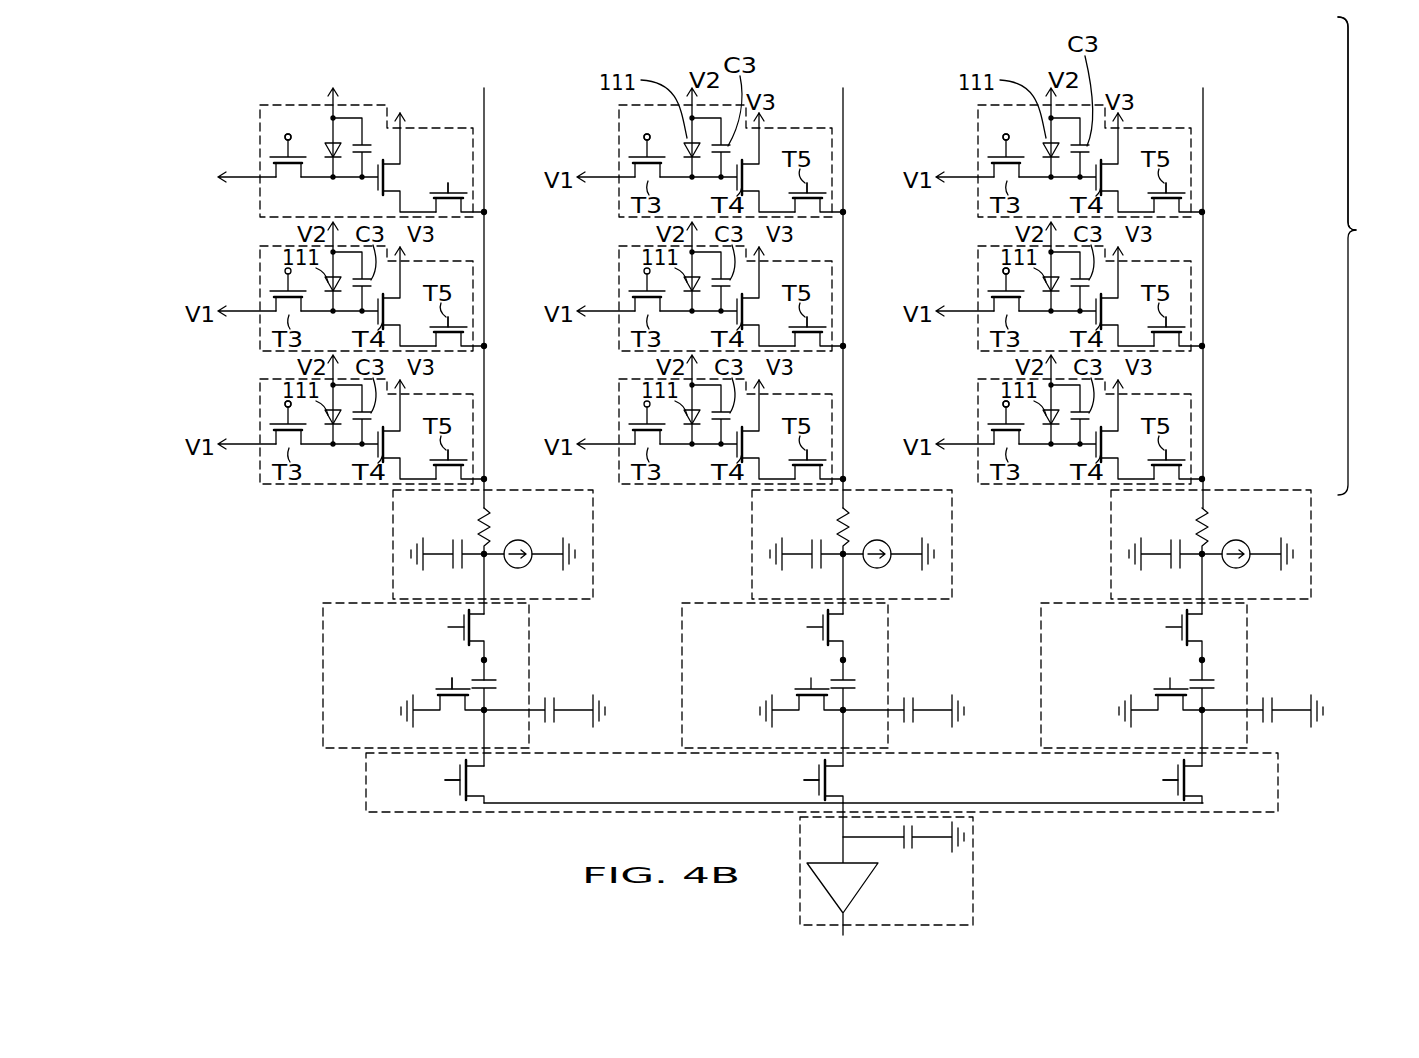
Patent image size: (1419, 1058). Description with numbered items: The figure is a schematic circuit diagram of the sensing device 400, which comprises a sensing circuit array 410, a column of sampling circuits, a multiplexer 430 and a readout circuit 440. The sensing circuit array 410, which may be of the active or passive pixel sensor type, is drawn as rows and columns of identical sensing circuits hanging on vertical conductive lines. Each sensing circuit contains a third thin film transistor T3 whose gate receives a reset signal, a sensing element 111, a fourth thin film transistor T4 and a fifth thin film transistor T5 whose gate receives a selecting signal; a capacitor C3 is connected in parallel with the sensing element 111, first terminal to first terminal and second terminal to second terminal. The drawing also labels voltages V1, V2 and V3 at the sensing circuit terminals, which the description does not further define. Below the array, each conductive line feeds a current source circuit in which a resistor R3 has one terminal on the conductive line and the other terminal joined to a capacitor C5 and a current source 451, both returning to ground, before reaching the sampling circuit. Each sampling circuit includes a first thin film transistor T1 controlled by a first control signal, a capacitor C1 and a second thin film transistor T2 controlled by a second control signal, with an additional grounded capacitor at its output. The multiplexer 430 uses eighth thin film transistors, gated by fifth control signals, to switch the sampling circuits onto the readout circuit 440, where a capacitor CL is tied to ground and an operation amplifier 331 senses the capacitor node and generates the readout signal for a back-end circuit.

The sensing device 400 is at (177, 53).
The sensing circuit array 410 is at (1372, 130).
The sensing element 111 is at (328, 138).
The current source 451 is at (528, 568).
The multiplexer 430 is at (1280, 784).
The readout circuit 440 is at (975, 885).
The operation amplifier 331 is at (862, 888).
The third thin film transistor T3 is at (289, 181).
The fourth thin film transistor T4 is at (383, 181).
The fifth thin film transistor T5 is at (446, 183).
The capacitor C3 is at (369, 146).
The reset voltage V1 is at (230, 180).
The voltage V2 is at (345, 93).
The supply voltage V3 is at (402, 105).
The capacitor C5 is at (458, 540).
The resistor R3 is at (491, 540).
The first thin film transistor T1 is at (476, 627).
The second thin film transistor T2 is at (447, 712).
The capacitor C1 is at (493, 684).
The capacitor CL is at (907, 846).